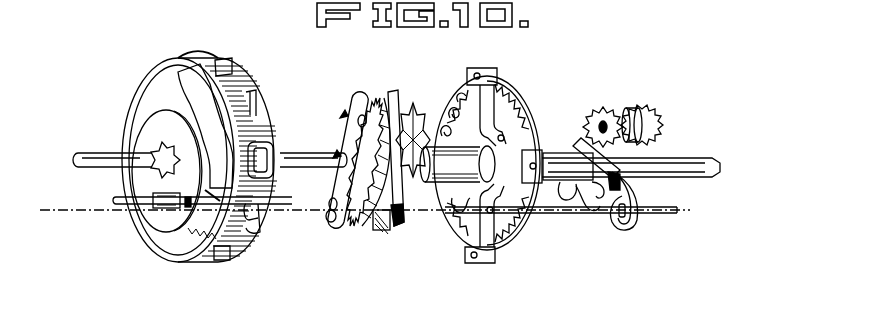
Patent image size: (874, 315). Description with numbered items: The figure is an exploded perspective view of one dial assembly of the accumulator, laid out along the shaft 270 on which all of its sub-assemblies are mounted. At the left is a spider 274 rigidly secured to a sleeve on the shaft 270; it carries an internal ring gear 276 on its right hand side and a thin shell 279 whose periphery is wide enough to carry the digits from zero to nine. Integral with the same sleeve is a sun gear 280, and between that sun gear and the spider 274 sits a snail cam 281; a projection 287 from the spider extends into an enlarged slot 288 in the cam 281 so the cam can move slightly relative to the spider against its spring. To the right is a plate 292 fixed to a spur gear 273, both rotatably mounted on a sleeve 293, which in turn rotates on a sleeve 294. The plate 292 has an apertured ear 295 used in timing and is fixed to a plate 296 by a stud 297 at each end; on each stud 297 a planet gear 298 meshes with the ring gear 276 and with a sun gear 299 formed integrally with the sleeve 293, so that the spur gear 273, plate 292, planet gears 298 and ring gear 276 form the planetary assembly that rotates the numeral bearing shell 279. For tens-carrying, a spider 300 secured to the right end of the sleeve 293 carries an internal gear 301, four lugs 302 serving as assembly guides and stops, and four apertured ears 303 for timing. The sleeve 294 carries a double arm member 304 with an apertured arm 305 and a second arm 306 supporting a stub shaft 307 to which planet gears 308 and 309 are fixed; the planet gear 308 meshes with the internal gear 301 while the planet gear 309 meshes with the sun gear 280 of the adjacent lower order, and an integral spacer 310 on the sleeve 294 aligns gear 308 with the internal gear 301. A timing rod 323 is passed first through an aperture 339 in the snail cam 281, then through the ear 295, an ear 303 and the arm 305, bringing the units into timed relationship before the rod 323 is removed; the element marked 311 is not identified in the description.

The shaft 270 is at (100, 153).
The spur gear 273 is at (410, 105).
The spider 274 is at (196, 102).
The internal ring gear 276 is at (196, 238).
The thin shell 279 is at (200, 58).
The sun gear 280 is at (152, 150).
The snail cam 281 is at (136, 183).
The projection 287 is at (158, 207).
The enlarged slot 288 is at (190, 206).
The plate 292 is at (380, 230).
The sleeve 293 is at (444, 183).
The sleeve 294 is at (564, 202).
The apertured ear 295 is at (396, 227).
The plate 296 is at (327, 220).
The stud 297 is at (358, 116).
The planet gear 298 is at (376, 98).
The sun gear 299 is at (356, 162).
The spider 300 is at (470, 100).
The internal gear 301 is at (522, 92).
The lugs 302 is at (488, 68).
The apertured ears 303 is at (540, 122).
The double arm member 304 is at (612, 180).
The arm 305 is at (636, 224).
The arm 306 is at (623, 104).
The stub shaft 307 is at (598, 124).
The planet gear 308 is at (604, 107).
The planet gear 309 is at (656, 110).
The integral spacer 310 is at (584, 210).
The hook 311 is at (602, 196).
The timing rod 323 is at (680, 210).
The aperture 339 is at (207, 195).